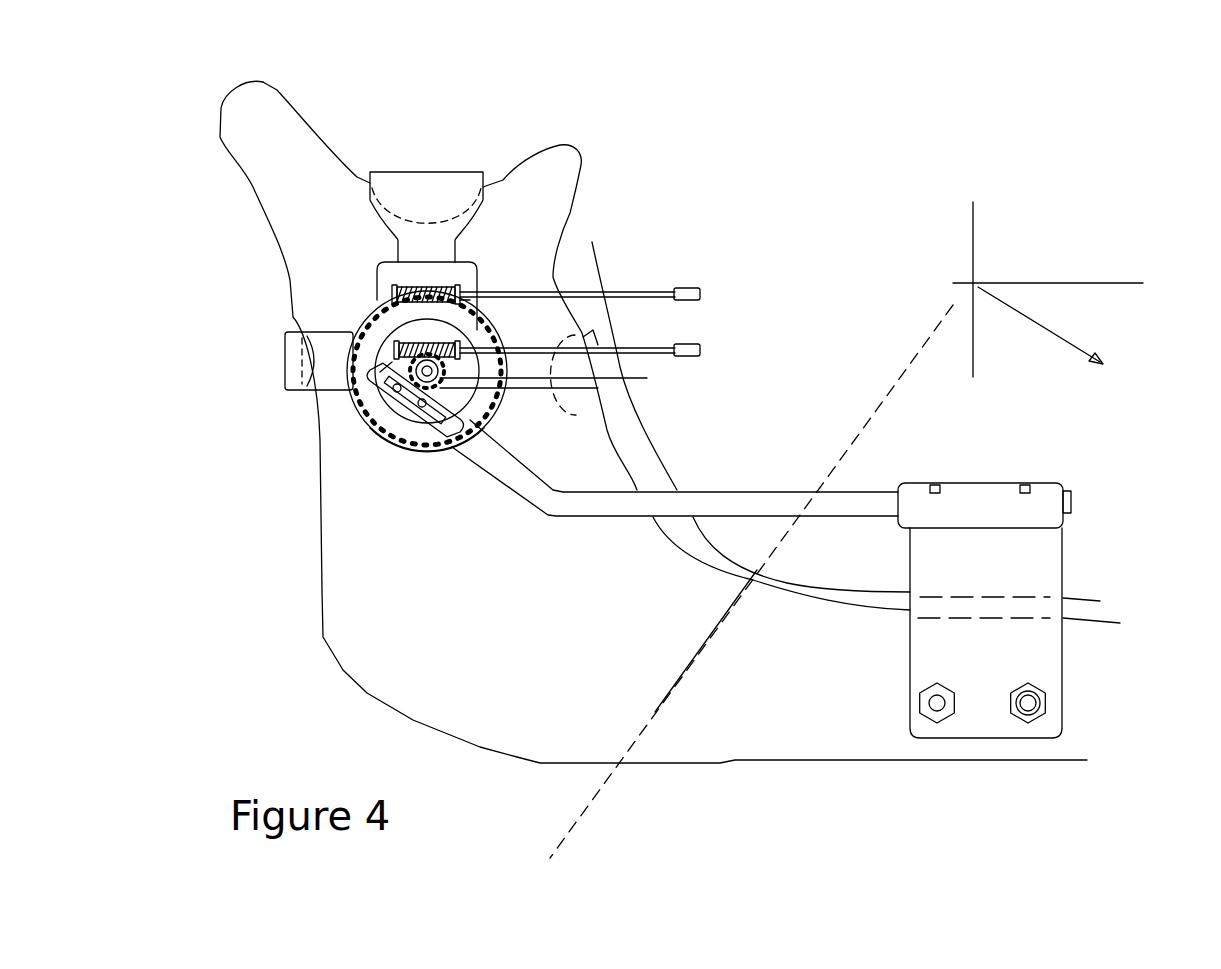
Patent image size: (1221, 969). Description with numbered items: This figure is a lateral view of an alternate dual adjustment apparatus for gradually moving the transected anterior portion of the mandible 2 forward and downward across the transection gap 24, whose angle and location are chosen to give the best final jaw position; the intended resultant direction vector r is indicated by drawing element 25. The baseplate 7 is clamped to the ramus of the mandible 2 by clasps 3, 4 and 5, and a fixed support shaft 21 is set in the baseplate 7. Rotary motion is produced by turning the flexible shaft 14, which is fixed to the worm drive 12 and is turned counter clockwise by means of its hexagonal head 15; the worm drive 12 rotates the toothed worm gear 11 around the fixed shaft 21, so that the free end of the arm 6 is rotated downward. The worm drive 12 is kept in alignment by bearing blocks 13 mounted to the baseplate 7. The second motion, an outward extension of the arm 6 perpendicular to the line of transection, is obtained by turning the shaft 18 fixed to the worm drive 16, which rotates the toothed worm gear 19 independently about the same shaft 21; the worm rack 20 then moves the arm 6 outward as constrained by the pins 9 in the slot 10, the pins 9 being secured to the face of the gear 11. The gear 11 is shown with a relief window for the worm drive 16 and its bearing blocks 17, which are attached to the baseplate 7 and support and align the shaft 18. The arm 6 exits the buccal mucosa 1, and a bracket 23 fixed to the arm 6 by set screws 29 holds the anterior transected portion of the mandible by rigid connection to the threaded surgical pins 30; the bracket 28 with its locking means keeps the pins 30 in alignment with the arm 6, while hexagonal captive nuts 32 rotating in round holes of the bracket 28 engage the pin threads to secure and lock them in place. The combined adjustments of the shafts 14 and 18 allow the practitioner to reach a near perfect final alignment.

The buccal mucosa 1 is at (600, 263).
The mandible 2 is at (262, 83).
The clasp 3 is at (283, 338).
The clasp 4 is at (383, 177).
The clasp 5 is at (593, 407).
The arm 6 is at (763, 490).
The baseplate 7 is at (377, 270).
The pins 9 is at (422, 403).
The slot 10 is at (417, 452).
The toothed worm gear 11 is at (418, 358).
The worm drive 12 is at (403, 297).
The bearing blocks 13 is at (455, 290).
The flexible shaft 14 is at (502, 292).
The hexagonal head 15 is at (700, 290).
The worm drive 16 is at (390, 323).
The bearing blocks 17 is at (412, 364).
The shaft 18 is at (700, 346).
The toothed worm gear 19 is at (392, 378).
The worm rack 20 is at (445, 430).
The fixed support shaft 21 is at (647, 378).
The bracket 23 is at (1060, 483).
The transection gap 24 is at (655, 712).
The direction vector drawing element 25 is at (953, 277).
The bracket 28 is at (1062, 572).
The set screws 29 is at (1025, 483).
The surgical pins 30 is at (1033, 707).
The hexagonal captive nut 32 is at (940, 720).